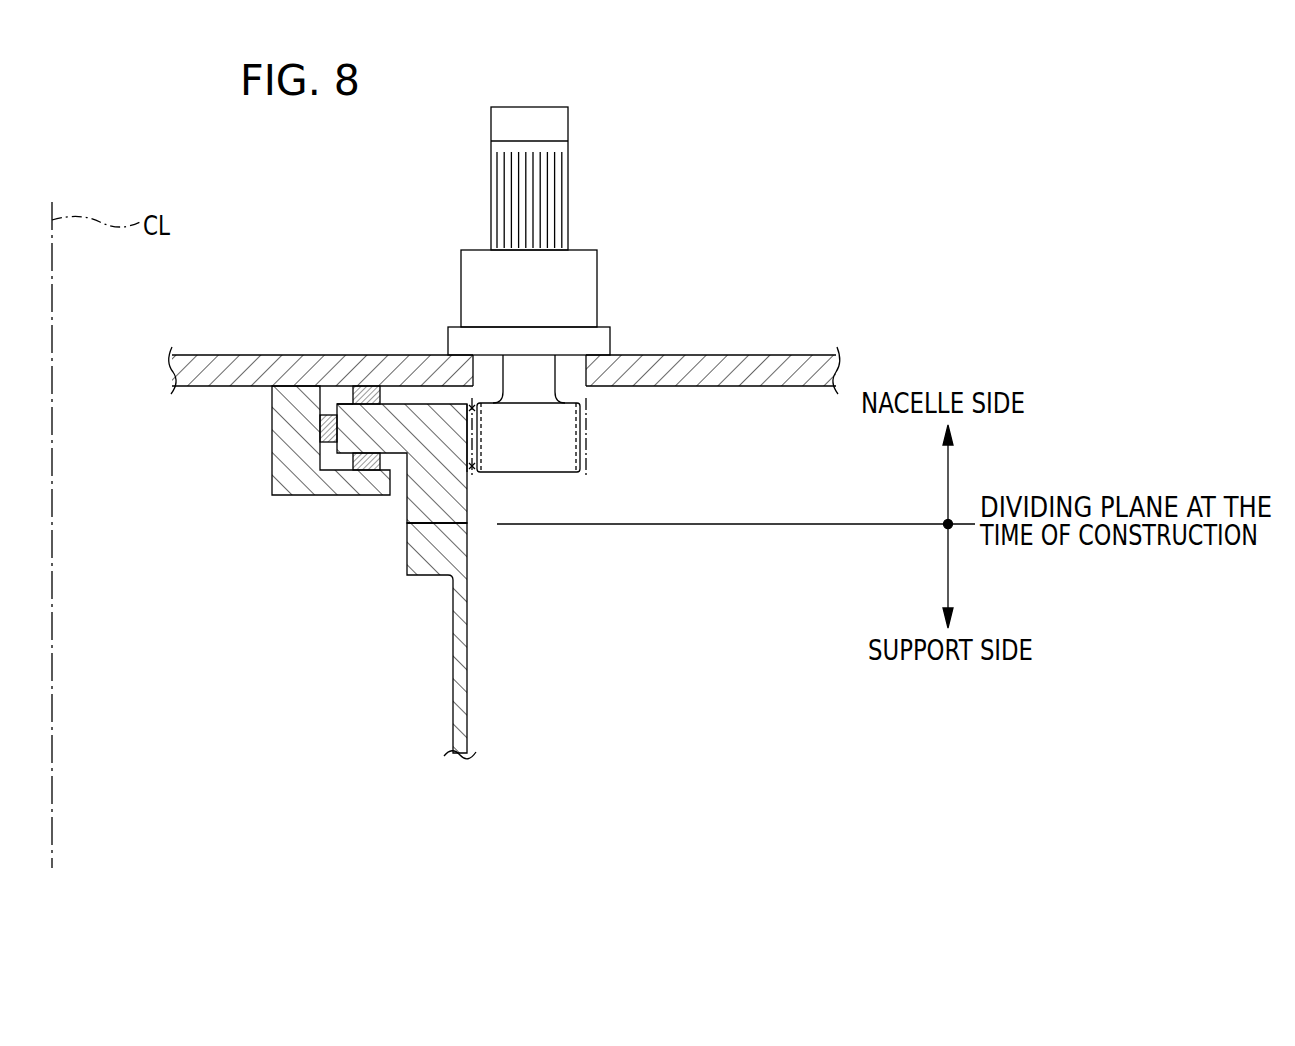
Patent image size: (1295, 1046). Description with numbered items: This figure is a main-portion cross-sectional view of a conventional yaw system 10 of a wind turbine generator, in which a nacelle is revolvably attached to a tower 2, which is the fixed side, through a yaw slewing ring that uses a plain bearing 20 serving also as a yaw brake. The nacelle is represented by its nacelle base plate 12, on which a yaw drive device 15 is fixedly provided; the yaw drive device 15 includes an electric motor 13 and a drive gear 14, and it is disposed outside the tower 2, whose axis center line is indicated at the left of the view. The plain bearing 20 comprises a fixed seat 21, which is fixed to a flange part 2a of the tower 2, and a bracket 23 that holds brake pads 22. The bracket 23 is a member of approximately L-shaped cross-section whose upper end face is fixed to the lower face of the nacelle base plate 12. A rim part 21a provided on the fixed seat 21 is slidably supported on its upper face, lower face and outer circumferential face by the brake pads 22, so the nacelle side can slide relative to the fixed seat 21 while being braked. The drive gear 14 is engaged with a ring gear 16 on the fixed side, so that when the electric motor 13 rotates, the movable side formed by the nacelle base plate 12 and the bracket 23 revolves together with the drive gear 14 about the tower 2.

The yaw system 10 is at (785, 170).
The nacelle base plate 12 is at (752, 355).
The electric motor 13 is at (568, 165).
The yaw drive device 15 is at (606, 244).
The drive gear 14 is at (587, 424).
The ring gear 16 is at (467, 470).
The plain bearing 20 is at (265, 516).
The fixed seat 21 is at (427, 444).
The rim part 21a is at (341, 403).
The brake pads 22 is at (367, 388).
The bracket 23 is at (272, 452).
The tower 2 is at (404, 641).
The flange part 2a is at (407, 556).